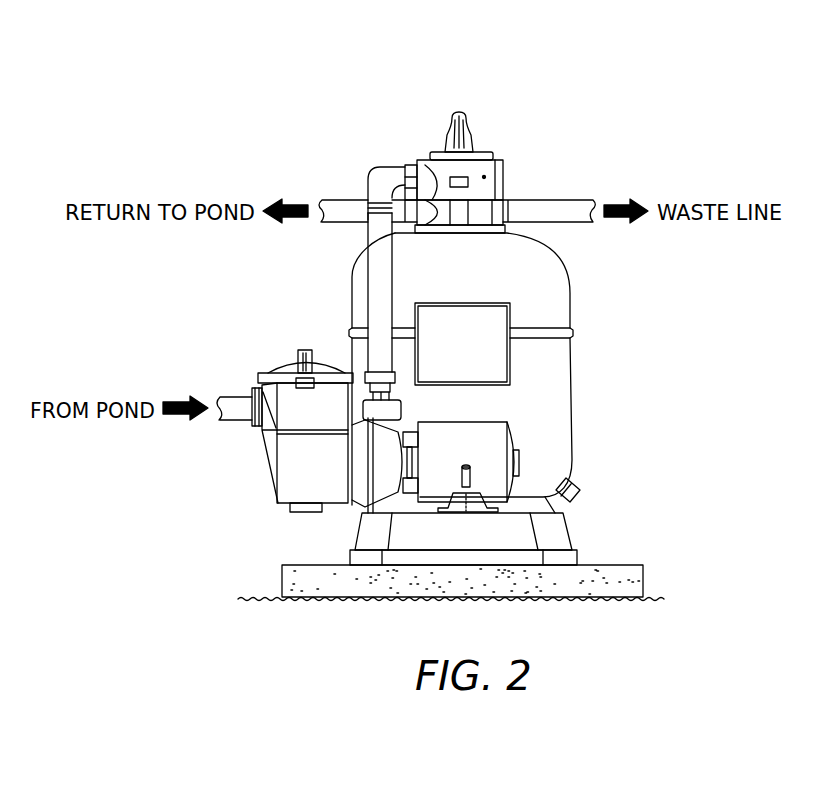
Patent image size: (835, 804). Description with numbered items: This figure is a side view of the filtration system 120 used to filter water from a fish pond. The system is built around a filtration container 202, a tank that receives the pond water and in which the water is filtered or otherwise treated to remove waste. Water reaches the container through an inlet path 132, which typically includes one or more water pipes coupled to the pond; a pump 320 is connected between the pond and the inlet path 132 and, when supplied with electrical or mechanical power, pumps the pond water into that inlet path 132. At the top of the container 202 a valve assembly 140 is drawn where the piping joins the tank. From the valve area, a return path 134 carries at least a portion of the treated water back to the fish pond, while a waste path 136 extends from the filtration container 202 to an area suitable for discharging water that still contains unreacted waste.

The filtration system 120 is at (513, 95).
The inlet path 132 is at (233, 396).
The return path 134 is at (345, 198).
The waste path 136 is at (555, 198).
The multiport valve 140 is at (468, 178).
The filtration container 202 is at (548, 277).
The pump 320 is at (270, 455).